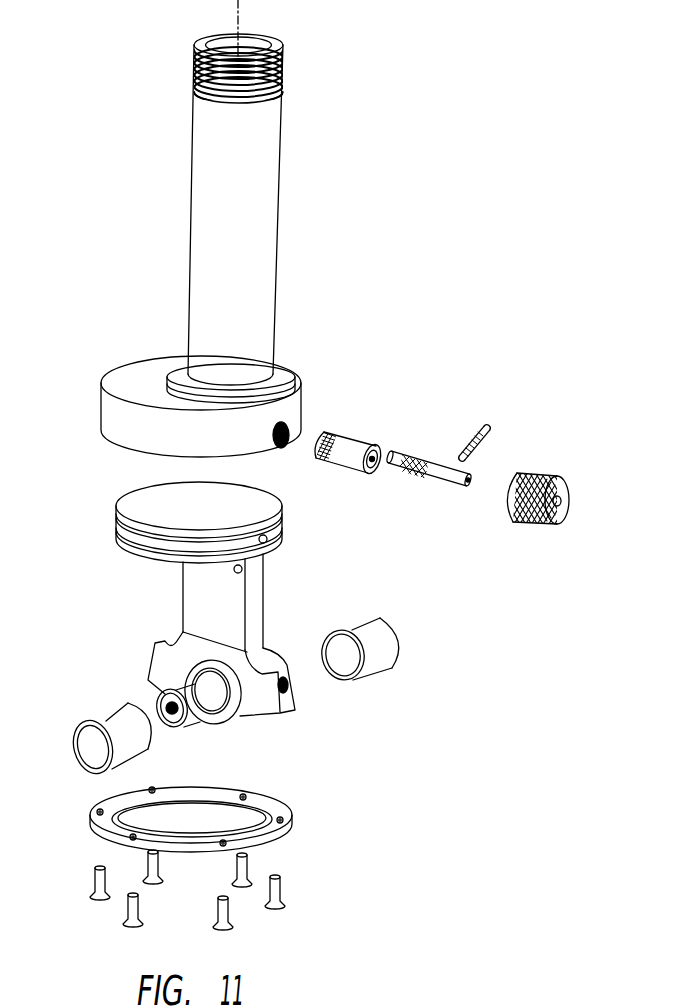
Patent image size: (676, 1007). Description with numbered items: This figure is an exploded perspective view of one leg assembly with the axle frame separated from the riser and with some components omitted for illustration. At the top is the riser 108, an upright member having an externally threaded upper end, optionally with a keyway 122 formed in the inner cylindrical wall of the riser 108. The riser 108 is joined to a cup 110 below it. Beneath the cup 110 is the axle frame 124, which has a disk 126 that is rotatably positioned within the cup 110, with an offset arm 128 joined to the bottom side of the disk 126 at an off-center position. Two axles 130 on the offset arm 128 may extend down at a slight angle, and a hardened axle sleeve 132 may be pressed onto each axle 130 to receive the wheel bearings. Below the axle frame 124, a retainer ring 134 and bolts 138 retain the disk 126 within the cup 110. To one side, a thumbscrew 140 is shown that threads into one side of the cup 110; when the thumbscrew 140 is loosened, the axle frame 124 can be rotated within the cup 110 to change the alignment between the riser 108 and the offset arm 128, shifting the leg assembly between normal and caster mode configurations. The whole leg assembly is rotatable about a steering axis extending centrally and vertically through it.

The riser 108 is at (260, 197).
The cup 110 is at (115, 410).
The keyway 122 is at (266, 50).
The axle frame 124 is at (236, 660).
The disk 126 is at (247, 507).
The offset arm 128 is at (190, 590).
The axles 130 is at (272, 655).
The hardened axle sleeve 132 is at (106, 714).
The retainer ring 134 is at (275, 815).
The bolts 138 is at (282, 890).
The thumbscrew 140 is at (495, 468).